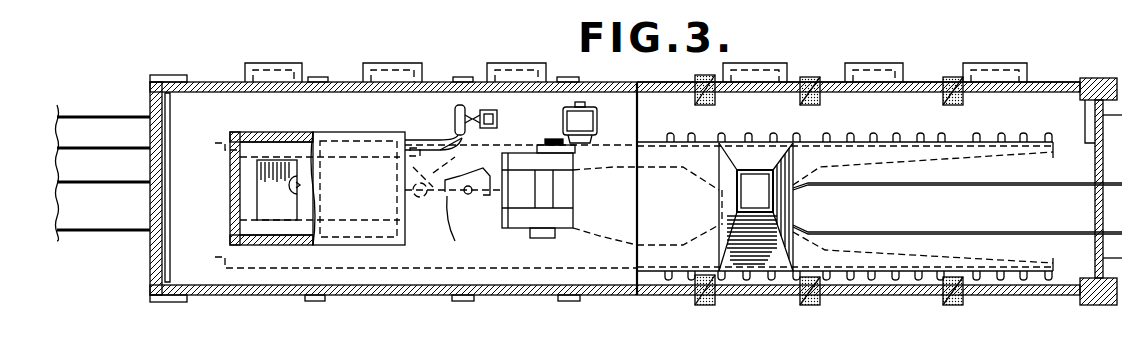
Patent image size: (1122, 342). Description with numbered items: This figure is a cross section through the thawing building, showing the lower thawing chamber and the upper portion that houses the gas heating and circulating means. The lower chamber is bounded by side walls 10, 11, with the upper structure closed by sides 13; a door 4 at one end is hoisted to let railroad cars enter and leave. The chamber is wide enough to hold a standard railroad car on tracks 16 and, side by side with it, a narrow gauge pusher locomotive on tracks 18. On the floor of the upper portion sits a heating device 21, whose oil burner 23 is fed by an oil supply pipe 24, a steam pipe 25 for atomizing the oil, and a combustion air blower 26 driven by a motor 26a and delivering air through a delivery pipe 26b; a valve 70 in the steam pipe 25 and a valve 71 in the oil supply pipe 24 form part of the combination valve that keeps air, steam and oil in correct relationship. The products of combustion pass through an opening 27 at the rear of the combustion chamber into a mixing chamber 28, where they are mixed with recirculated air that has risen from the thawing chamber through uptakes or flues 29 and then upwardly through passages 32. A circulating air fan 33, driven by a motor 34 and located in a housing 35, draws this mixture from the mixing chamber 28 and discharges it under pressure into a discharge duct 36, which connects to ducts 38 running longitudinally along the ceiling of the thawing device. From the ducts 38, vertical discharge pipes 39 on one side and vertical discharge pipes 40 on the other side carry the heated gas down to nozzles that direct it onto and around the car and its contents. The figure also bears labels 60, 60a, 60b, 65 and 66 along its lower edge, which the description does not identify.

The door 4 is at (165, 250).
The side wall 10 is at (1050, 298).
The side wall 11 is at (920, 86).
The sides 13 is at (205, 82).
The tracks 16 is at (82, 182).
The tracks 18 is at (78, 126).
The heating device 21 is at (320, 145).
The oil burner 23 is at (452, 205).
The oil supply pipe 24 is at (455, 182).
The steam pipe 25 is at (445, 198).
The combustion air blower 26 is at (462, 105).
The motor 26a is at (490, 112).
The delivery pipe 26b is at (458, 138).
The opening 27 is at (278, 190).
The mixing chamber 28 is at (311, 172).
The uptakes or flues 29 is at (392, 68).
The passages 32 is at (266, 142).
The circulating air fan 33 is at (565, 190).
The motor 34 is at (597, 120).
The housing 35 is at (518, 218).
The discharge duct 36 is at (770, 196).
The ducts 38 is at (215, 143).
The vertical discharge pipes 39 is at (770, 134).
The vertical discharge pipes 40 is at (690, 282).
The passage 60 is at (589, 338).
The passage 60a is at (769, 338).
The passage 60b is at (844, 338).
The duct 65 is at (892, 338).
The duct 66 is at (937, 338).
The valve 70 is at (472, 193).
The valve 71 is at (430, 150).